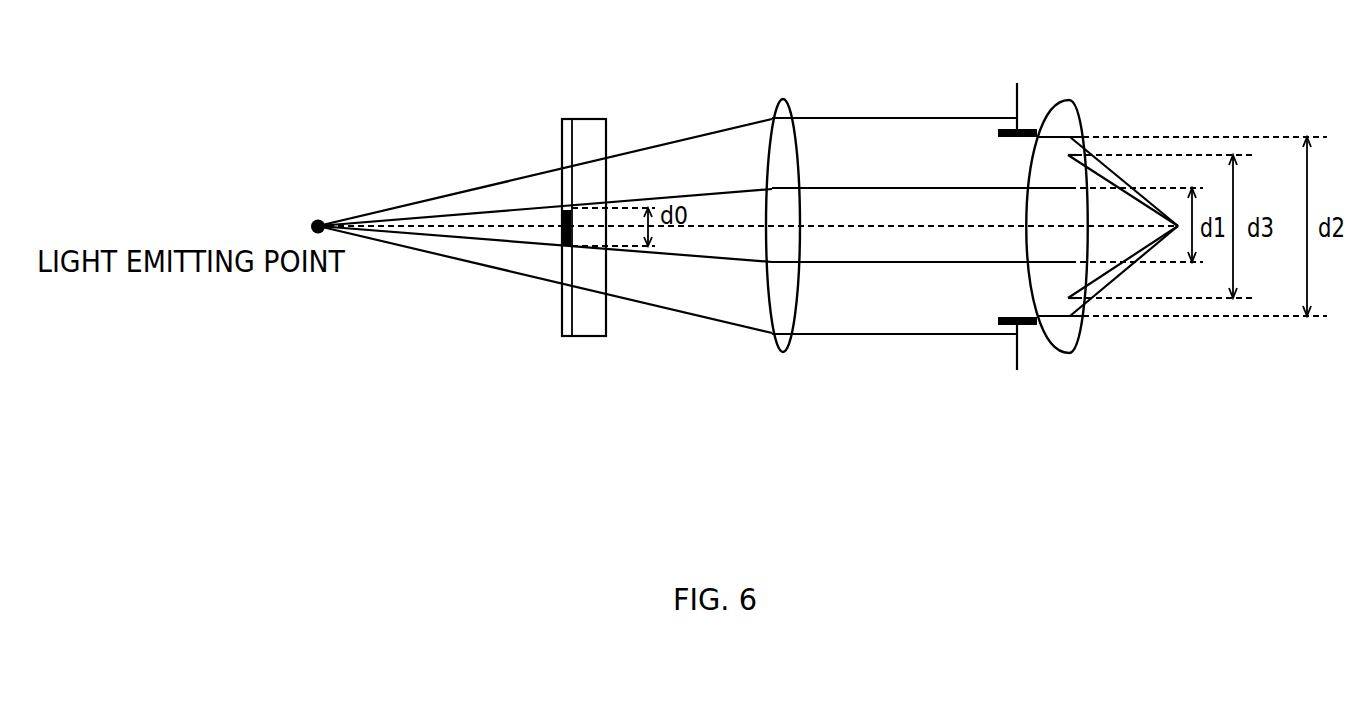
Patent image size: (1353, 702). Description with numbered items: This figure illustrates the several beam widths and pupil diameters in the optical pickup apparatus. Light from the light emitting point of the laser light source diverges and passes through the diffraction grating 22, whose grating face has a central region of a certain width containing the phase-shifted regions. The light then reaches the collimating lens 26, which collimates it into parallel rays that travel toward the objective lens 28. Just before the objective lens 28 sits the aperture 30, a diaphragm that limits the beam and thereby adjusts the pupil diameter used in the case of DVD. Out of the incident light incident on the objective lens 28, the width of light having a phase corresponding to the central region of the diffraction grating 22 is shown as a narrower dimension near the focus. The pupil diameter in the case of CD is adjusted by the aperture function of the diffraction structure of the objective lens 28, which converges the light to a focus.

The diffraction grating 22 is at (587, 337).
The collimating lens 26 is at (783, 352).
The objective lens 28 is at (1069, 354).
The aperture 30 is at (997, 137).